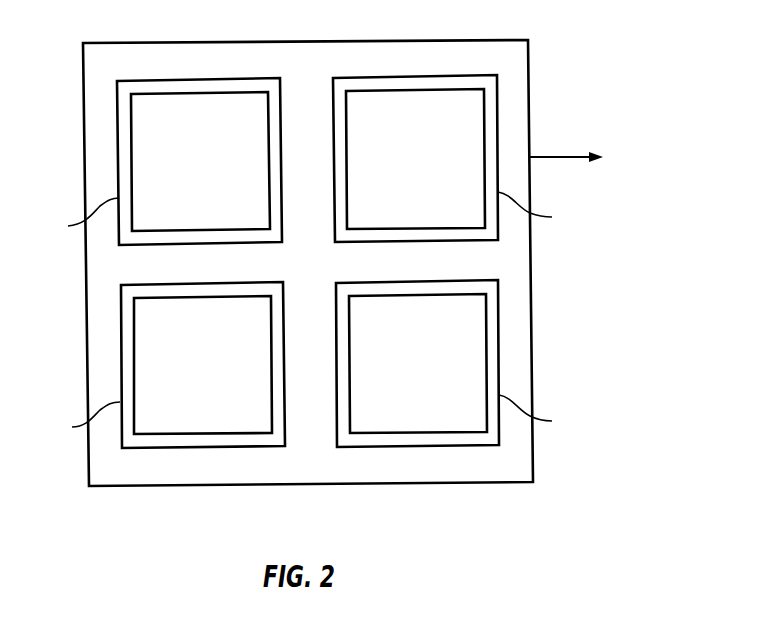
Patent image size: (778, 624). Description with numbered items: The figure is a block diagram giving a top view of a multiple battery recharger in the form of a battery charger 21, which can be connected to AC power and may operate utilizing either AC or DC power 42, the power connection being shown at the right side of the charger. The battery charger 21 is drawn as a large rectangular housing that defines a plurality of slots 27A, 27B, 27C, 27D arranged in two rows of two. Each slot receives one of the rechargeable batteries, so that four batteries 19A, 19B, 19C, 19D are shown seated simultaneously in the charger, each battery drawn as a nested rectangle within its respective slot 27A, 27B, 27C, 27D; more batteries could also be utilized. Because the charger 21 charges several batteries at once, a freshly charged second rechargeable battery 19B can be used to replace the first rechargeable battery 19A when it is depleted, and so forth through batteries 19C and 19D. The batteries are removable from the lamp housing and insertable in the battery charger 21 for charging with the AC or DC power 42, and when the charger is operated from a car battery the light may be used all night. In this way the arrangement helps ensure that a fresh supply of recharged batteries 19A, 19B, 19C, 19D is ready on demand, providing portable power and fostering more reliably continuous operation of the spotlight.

The battery charger 21 is at (100, 43).
The first rechargeable battery 19A is at (221, 174).
The second rechargeable battery 19B is at (436, 171).
The rechargeable battery 19C is at (439, 376).
The rechargeable battery 19D is at (224, 377).
The slot 27A is at (72, 219).
The slot 27B is at (545, 213).
The slot 27C is at (547, 416).
The slot 27D is at (74, 423).
The AC or DC power 42 is at (591, 136).